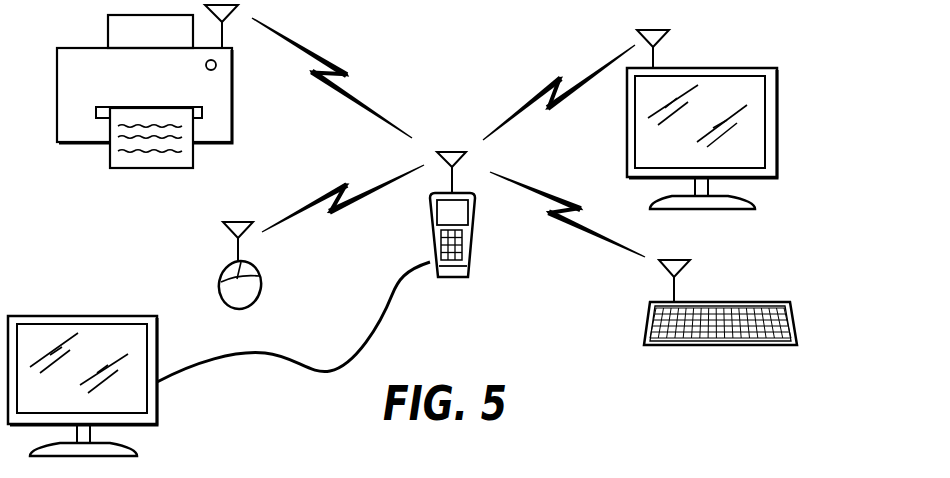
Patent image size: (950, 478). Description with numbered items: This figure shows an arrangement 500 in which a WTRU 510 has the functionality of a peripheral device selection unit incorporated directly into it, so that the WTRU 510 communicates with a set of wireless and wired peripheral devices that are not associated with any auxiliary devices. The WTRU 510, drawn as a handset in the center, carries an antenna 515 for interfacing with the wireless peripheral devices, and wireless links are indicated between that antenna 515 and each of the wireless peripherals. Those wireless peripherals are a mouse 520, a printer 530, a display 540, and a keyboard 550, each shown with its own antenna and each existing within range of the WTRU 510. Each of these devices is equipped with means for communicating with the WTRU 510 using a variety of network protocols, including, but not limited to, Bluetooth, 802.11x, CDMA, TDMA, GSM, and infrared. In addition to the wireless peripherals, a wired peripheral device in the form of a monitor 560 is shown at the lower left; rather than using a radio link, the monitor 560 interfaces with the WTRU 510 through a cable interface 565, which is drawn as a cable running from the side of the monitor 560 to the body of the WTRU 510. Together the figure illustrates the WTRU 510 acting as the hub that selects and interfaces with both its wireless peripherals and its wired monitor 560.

The wireless communication system 500 is at (858, 30).
The WTRU 510 is at (452, 278).
The antenna 515 is at (449, 150).
The mouse 520 is at (256, 300).
The printer 530 is at (65, 143).
The display 540 is at (777, 124).
The keyboard 550 is at (797, 332).
The monitor 560 is at (157, 418).
The cable interface 565 is at (262, 356).